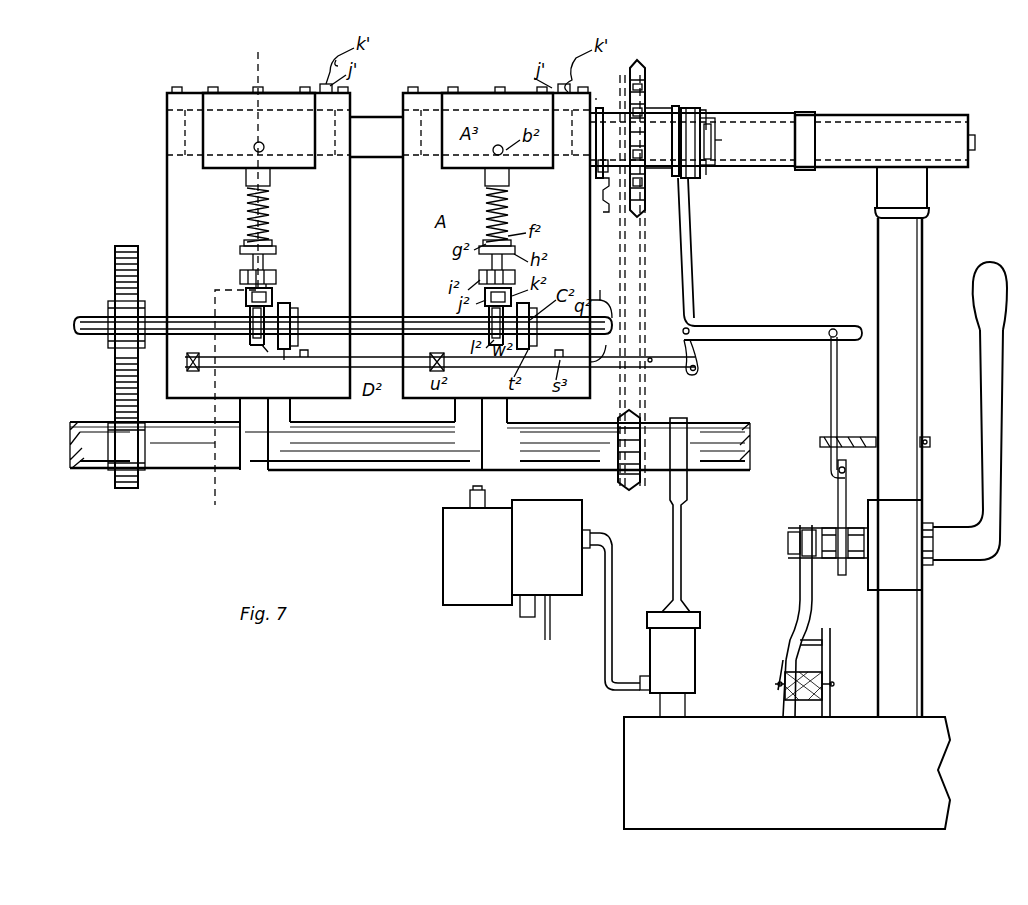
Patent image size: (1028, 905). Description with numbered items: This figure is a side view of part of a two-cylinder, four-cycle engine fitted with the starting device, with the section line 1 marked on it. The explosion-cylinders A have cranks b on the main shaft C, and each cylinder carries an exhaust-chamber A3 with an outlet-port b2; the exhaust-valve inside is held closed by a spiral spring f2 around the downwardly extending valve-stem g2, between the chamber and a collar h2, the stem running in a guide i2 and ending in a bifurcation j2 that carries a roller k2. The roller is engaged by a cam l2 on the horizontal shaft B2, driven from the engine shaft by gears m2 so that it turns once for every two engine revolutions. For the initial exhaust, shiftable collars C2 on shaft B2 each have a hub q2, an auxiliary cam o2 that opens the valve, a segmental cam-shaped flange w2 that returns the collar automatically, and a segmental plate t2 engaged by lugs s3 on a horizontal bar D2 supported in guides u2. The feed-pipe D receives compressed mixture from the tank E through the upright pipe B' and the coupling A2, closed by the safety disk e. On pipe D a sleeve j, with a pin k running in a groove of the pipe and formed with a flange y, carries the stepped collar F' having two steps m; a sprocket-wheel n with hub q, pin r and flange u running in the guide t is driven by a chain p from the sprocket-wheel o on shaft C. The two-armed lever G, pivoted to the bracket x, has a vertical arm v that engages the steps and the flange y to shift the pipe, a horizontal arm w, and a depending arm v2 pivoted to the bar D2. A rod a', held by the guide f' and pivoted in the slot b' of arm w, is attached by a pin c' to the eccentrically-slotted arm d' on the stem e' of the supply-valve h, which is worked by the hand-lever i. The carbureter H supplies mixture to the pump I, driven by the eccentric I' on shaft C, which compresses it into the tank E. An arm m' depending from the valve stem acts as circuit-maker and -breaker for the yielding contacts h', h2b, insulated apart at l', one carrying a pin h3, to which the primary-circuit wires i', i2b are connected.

The section line 1 is at (231, 282).
The explosion-cylinder A is at (258, 241).
The coupling A2 is at (881, 141).
The exhaust-chamber A3 is at (259, 130).
The outlet-port b2 is at (264, 146).
The spiral spring f2 is at (270, 236).
The valve-stem g2 is at (272, 246).
The collar h2 is at (240, 260).
The guide i2 is at (278, 278).
The roller k2 is at (247, 298).
The segmental cam-shaped flange w2 is at (276, 284).
The bifurcation j2 is at (278, 305).
The cam l2 is at (256, 340).
The collar C2 is at (283, 348).
The hub q2 is at (298, 318).
The segmental plate t2 is at (292, 348).
The cam o2 is at (262, 345).
The lug s3 is at (306, 356).
The guide u2 is at (310, 373).
The horizontal bar D2 is at (362, 379).
The discharge-pipe D is at (372, 128).
The horizontal shaft B2 is at (372, 322).
The gears m2 is at (115, 276).
The main shaft C is at (380, 458).
The crank b is at (374, 434).
The bracket x is at (645, 325).
The pin r is at (643, 106).
The sprocket-wheel o is at (630, 492).
The sprocket-wheel n is at (628, 98).
The hub q is at (658, 138).
The flange u is at (596, 170).
The guide t is at (608, 197).
The flange y is at (674, 172).
The stepped collar F' is at (708, 151).
The pin k is at (715, 141).
The sleeve j is at (726, 150).
The step m is at (703, 143).
The vertical arm v is at (692, 250).
The two-armed lever G is at (697, 305).
The horizontal arm w is at (770, 323).
The arm v2 is at (698, 352).
The chain p is at (650, 392).
The disk e is at (975, 153).
The upright pipe B' is at (883, 442).
The longitudinal slot b' is at (833, 318).
The rod a' is at (818, 403).
The guide f' is at (834, 442).
The pin c' is at (825, 470).
The eccentrically-slotted arm d' is at (829, 517).
The valve stem e' is at (828, 557).
The circuit-maker and -breaker m' is at (791, 592).
The pin h3 is at (812, 642).
The yielding electric-contact h' is at (780, 670).
The yielding electric-contact h2b is at (832, 648).
The insulation l' is at (815, 693).
The wire i' is at (765, 688).
The wire i2b is at (832, 676).
The oscillatory valve h is at (909, 550).
The hand-lever i is at (964, 413).
The carbureter H is at (527, 583).
The pump I is at (662, 664).
The eccentric I' is at (685, 515).
The tank E is at (787, 773).